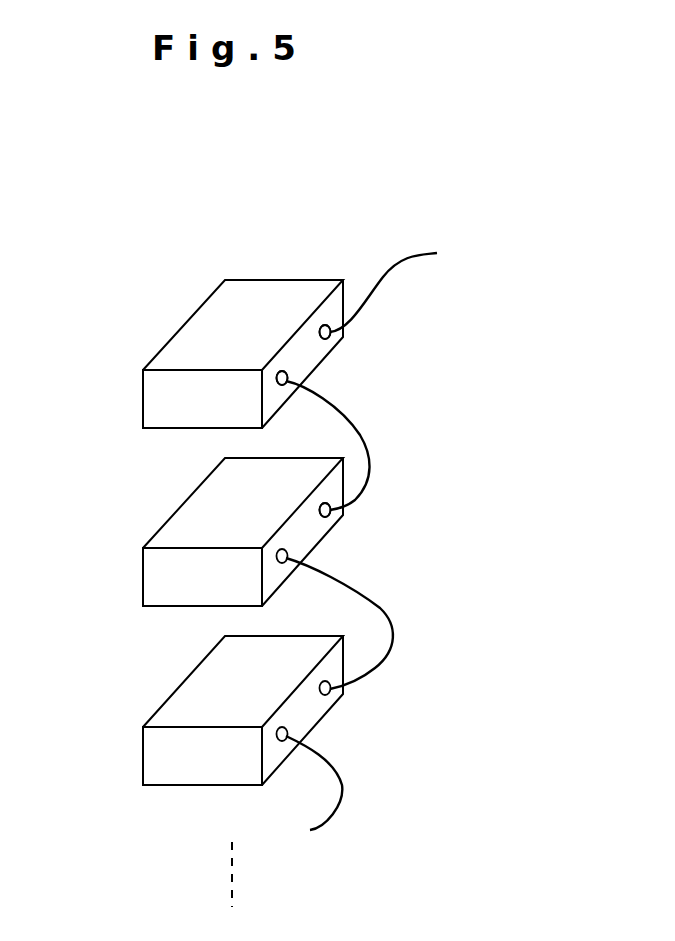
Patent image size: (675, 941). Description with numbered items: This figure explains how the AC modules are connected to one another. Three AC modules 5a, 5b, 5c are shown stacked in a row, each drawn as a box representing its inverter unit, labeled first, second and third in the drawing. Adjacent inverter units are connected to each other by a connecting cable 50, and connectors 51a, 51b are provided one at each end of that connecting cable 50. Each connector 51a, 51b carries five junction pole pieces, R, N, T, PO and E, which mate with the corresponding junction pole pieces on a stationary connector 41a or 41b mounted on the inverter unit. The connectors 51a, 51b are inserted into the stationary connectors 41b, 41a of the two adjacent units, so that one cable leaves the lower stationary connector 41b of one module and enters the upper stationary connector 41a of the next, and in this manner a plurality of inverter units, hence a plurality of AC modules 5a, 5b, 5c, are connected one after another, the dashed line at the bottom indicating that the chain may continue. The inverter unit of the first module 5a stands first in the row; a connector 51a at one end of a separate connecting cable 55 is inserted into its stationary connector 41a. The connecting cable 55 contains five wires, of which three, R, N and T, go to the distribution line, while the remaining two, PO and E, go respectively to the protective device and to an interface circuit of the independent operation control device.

The AC module 5a is at (193, 313).
The AC module 5b is at (183, 502).
The AC module 5c is at (177, 687).
The stationary connector 41a is at (337, 326).
The stationary connector 41b is at (290, 377).
The connector 51a is at (337, 326).
The connector 51b is at (332, 510).
The connecting cable 55 is at (383, 280).
The connecting cable 50 is at (353, 417).